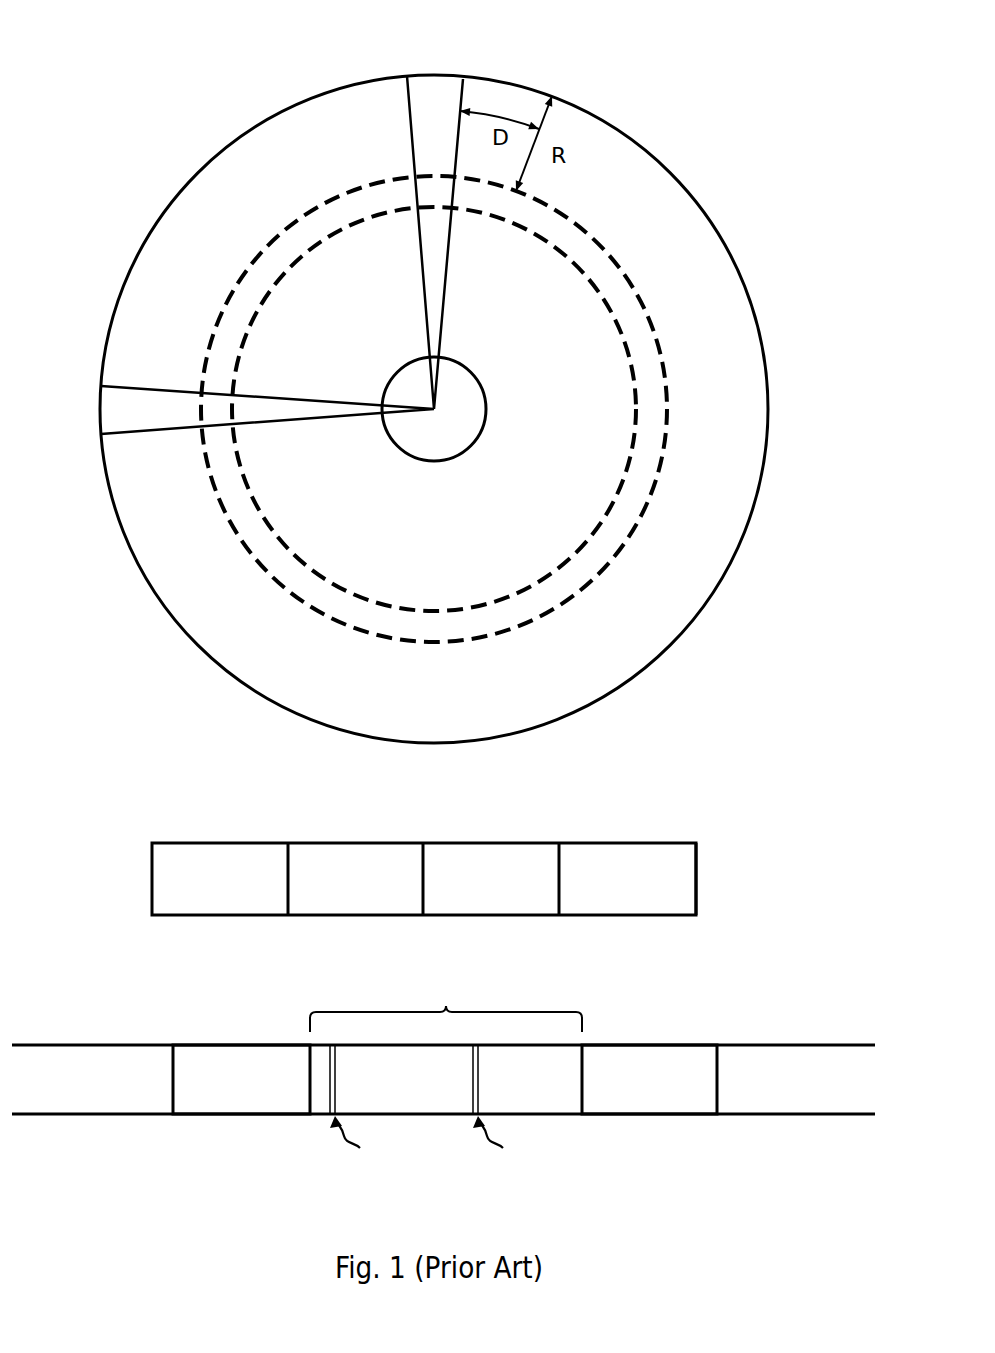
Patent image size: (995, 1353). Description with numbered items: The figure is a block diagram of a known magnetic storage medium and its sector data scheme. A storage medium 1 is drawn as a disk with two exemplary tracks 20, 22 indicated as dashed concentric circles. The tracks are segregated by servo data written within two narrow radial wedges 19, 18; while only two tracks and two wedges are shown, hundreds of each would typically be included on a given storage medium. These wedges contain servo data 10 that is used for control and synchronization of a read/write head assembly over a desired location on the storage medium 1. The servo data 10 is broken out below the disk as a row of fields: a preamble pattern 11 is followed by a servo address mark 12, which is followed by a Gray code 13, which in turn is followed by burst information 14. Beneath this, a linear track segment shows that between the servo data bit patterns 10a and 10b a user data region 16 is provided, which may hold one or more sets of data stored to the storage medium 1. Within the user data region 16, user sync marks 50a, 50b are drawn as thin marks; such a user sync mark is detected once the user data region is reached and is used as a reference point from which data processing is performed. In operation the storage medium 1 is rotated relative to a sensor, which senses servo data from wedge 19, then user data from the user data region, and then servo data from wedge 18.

The storage medium 1 is at (75, 122).
The wedge 18 is at (436, 74).
The wedge 19 is at (101, 410).
The track 20 is at (598, 289).
The track 22 is at (590, 230).
The servo data 10 is at (424, 842).
The preamble pattern 11 is at (231, 879).
The servo address mark 12 is at (377, 879).
The Gray code 13 is at (498, 879).
The burst information 14 is at (647, 879).
The user data region 16 is at (383, 976).
The servo data bit pattern 10a is at (241, 1079).
The servo data bit pattern 10b is at (649, 1079).
The user sync mark 50a is at (301, 1170).
The user sync mark 50b is at (572, 1171).